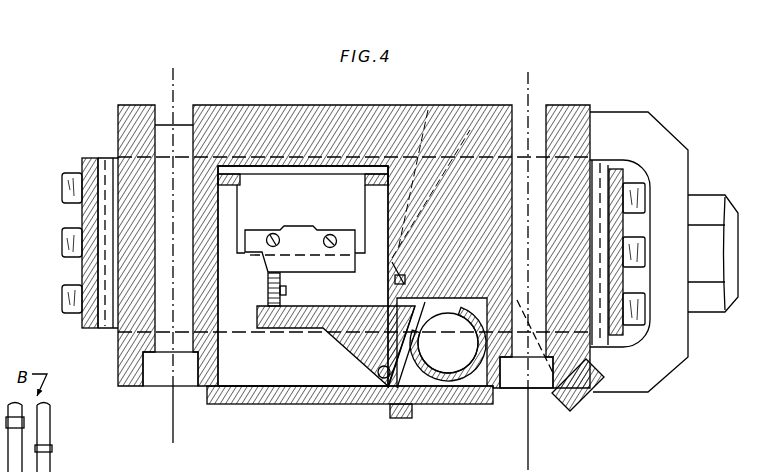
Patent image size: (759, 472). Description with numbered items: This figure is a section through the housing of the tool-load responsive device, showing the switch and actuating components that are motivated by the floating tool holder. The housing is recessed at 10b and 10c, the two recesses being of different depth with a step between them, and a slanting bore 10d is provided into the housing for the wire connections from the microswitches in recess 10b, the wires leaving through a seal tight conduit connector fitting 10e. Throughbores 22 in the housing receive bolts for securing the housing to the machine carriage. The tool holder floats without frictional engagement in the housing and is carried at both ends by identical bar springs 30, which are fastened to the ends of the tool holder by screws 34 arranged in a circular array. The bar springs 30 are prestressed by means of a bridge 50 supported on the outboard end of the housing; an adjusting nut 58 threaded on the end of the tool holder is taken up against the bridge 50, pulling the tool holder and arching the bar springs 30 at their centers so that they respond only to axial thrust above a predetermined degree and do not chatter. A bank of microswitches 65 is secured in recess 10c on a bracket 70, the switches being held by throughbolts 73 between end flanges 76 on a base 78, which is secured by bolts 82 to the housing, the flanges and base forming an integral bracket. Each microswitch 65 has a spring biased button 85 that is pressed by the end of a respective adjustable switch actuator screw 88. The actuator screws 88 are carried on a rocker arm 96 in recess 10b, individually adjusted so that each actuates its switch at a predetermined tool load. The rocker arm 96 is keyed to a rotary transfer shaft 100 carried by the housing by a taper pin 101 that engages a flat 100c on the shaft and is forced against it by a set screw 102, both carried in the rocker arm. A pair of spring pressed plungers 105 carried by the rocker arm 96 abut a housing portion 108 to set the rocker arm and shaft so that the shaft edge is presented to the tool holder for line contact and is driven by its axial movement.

The recess 10b is at (252, 376).
The recess 10c is at (475, 395).
The slanting bore 10d is at (432, 105).
The seal tight conduit connector fitting 10e is at (578, 405).
The throughbores 22 is at (537, 123).
The bar springs 30 is at (88, 158).
The screws 34 is at (62, 185).
The bridge 50 is at (677, 345).
The adjusting nut 58 is at (710, 197).
The microswitches 65 is at (309, 240).
The bracket 70 is at (326, 160).
The throughbolts 73 is at (275, 235).
The end flanges 76 is at (265, 216).
The base 78 is at (285, 168).
The bolts 82 is at (367, 174).
The spring biased button 85 is at (266, 281).
The adjustable switch actuator screw 88 is at (283, 292).
The rocker arm 96 is at (318, 331).
The rotary transfer shaft 100 is at (450, 390).
The flat 100c is at (430, 394).
The taper pin 101 is at (398, 272).
The set screw 102 is at (377, 366).
The spring pressed plungers 105 is at (390, 301).
The housing portion 108 is at (396, 280).